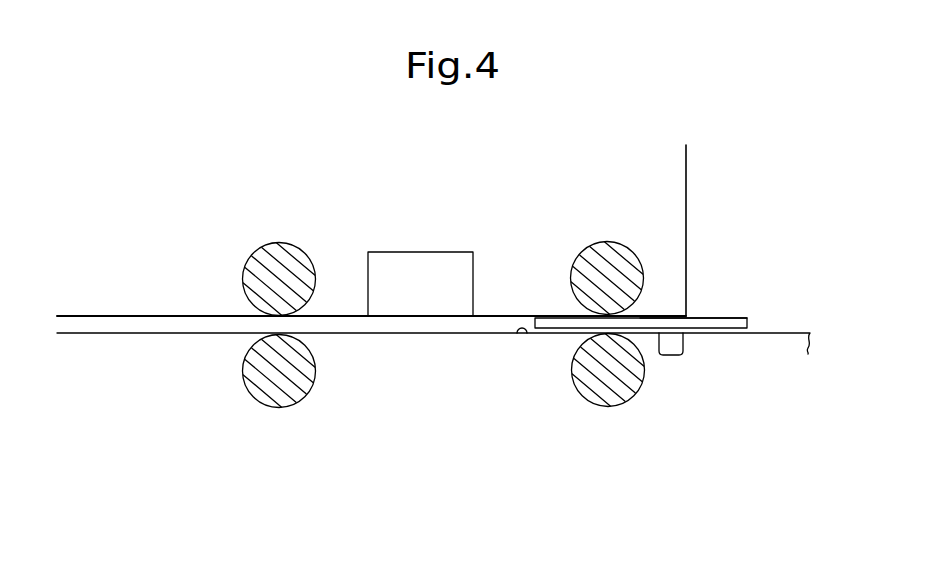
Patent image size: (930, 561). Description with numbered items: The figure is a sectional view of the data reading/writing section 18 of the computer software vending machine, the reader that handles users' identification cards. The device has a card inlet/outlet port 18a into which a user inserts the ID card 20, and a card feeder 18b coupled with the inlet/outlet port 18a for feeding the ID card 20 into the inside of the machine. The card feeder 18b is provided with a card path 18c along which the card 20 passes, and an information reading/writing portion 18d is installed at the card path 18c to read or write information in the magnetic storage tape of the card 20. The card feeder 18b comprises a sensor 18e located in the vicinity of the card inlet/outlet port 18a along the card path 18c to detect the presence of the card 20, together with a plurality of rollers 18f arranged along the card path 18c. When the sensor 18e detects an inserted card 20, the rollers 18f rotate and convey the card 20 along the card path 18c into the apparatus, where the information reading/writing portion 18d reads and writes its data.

The data reading/writing section 18 is at (413, 353).
The card inlet/outlet port 18a is at (697, 317).
The card feeder 18b is at (630, 238).
The card path 18c is at (525, 336).
The information reading/writing portion 18d is at (434, 260).
The sensor 18e is at (670, 352).
The rollers 18f is at (300, 263).
The ID card 20 is at (735, 320).